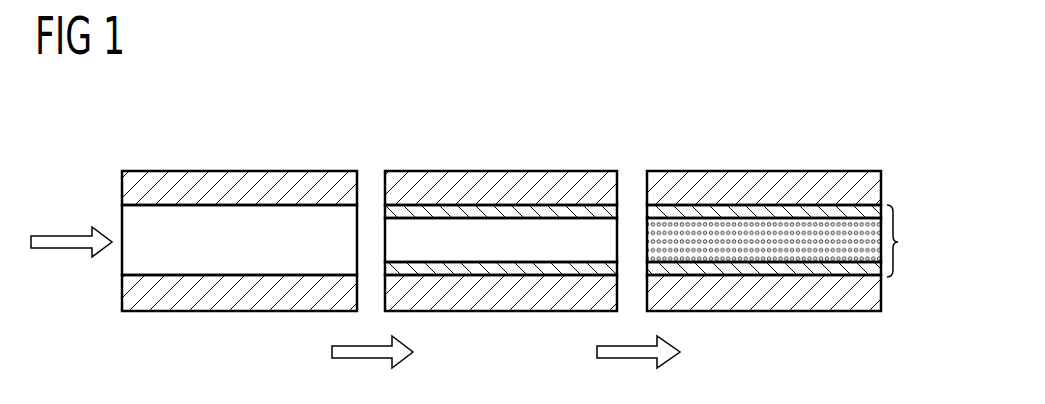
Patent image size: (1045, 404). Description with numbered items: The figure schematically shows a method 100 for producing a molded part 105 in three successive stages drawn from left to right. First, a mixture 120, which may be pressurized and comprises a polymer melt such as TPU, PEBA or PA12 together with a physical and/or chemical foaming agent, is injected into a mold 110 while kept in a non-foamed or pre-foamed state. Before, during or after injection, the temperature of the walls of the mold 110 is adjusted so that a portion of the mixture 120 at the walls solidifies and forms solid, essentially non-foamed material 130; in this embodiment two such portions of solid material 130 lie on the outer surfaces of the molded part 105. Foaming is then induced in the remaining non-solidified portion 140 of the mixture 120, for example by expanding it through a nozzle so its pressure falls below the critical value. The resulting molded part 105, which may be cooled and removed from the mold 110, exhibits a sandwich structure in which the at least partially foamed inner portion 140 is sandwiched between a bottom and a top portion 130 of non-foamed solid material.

The method 100 is at (316, 49).
The molded part 105 is at (917, 241).
The mold 110 is at (240, 184).
The mixture 120 is at (313, 221).
The solid, essentially non-foamed material 130 is at (512, 211).
The non-solidified portion 140 is at (851, 222).